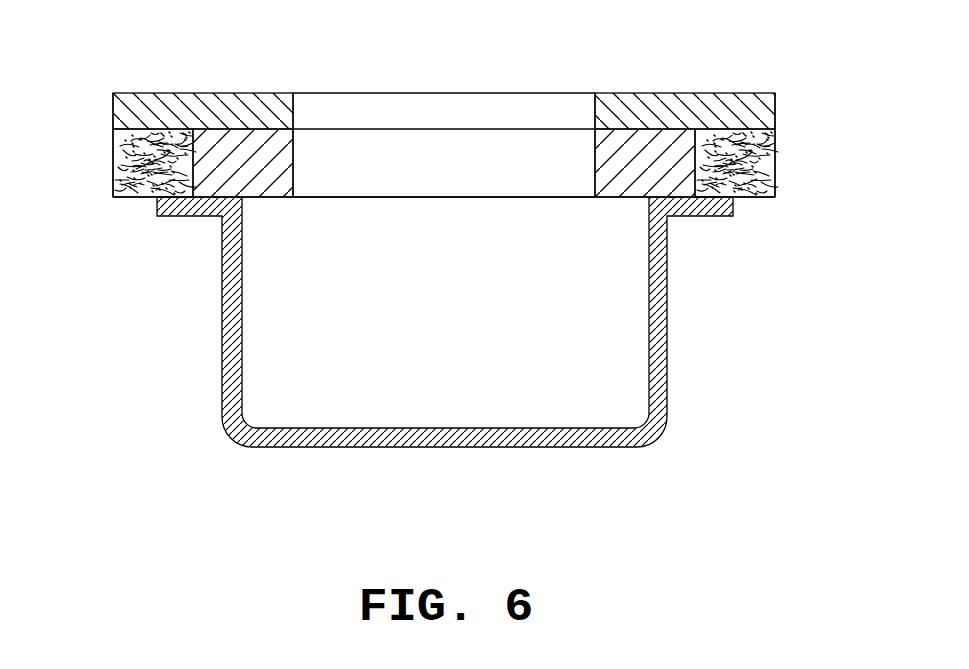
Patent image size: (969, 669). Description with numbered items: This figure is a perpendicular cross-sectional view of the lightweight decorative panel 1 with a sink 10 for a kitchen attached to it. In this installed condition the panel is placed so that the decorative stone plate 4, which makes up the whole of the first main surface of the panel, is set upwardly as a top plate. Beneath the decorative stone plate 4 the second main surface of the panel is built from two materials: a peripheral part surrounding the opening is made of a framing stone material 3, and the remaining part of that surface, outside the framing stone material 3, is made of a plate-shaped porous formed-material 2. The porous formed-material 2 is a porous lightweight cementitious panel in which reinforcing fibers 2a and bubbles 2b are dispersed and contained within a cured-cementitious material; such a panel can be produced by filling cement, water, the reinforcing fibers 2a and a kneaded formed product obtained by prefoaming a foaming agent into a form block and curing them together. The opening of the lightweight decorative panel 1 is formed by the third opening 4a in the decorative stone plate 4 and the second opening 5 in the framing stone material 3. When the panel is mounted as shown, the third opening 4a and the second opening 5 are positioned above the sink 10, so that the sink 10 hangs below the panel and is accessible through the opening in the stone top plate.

The lightweight decorative panel 1 is at (444, 269).
The porous formed-material 2 is at (730, 200).
The reinforcing fiber 2a is at (712, 187).
The bubble 2b is at (765, 193).
The framing stone material 3 is at (627, 188).
The decorative stone plate 4 is at (670, 105).
The third opening 4a is at (592, 108).
The second opening 5 is at (592, 162).
The sink 10 is at (410, 436).